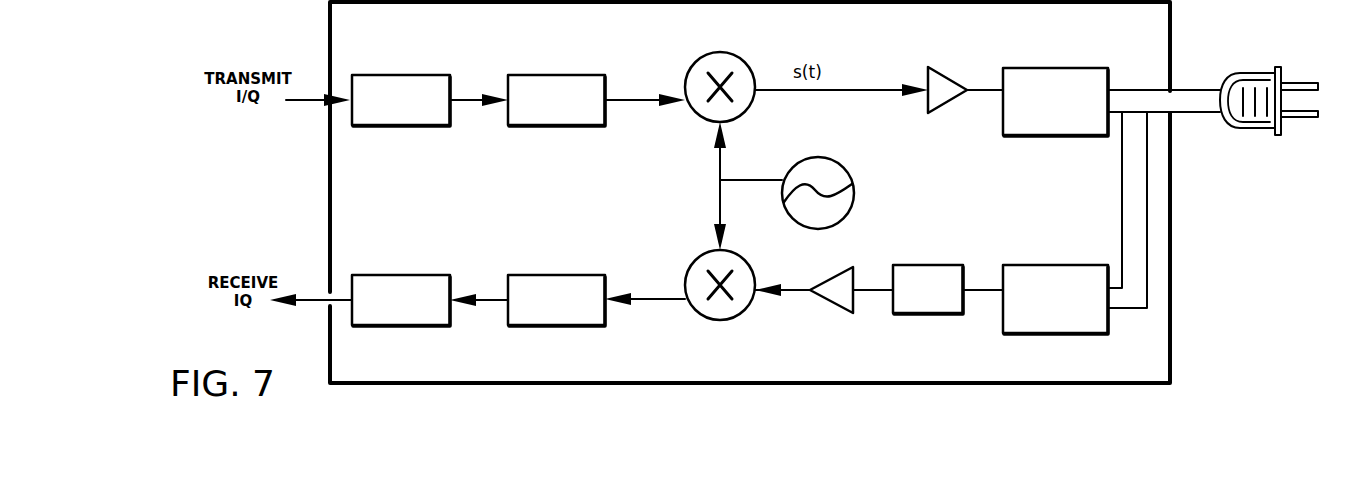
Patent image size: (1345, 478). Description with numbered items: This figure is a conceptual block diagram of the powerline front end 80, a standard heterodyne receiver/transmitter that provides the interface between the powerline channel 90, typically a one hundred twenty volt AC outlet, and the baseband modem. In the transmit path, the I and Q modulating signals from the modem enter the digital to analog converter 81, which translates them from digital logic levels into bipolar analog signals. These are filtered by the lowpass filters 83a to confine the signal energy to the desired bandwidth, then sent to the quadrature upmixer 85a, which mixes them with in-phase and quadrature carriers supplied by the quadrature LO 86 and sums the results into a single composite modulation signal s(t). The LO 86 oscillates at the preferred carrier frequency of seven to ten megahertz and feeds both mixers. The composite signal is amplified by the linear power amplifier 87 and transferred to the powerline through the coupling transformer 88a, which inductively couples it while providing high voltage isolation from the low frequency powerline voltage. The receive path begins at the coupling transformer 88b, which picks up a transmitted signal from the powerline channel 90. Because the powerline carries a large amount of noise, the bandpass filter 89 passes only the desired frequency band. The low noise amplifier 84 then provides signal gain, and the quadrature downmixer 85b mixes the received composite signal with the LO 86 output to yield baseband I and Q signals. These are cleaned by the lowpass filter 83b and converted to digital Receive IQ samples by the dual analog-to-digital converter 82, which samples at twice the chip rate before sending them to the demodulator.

The powerline front end 80 is at (385, 383).
The digital to analog converter 81 is at (430, 75).
The dual analog-to-digital converter 82 is at (425, 275).
The lowpass filters 83a is at (580, 75).
The lowpass filter 83b is at (580, 275).
The low noise amplifier 84 is at (848, 310).
The quadrature upmixer 85a is at (745, 62).
The quadrature downmixer 85b is at (745, 260).
The quadrature local oscillator 86 is at (845, 172).
The linear power amplifier 87 is at (940, 108).
The coupling transformer 88a is at (1045, 68).
The coupling transformer 88b is at (1028, 265).
The bandpass filter 89 is at (958, 314).
The powerline channel 90 is at (1245, 74).